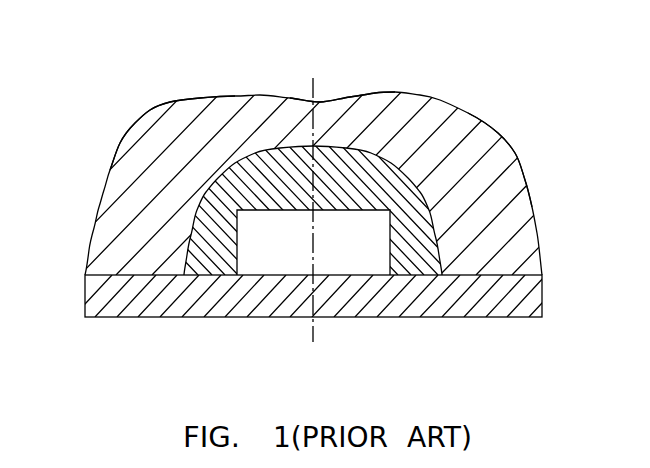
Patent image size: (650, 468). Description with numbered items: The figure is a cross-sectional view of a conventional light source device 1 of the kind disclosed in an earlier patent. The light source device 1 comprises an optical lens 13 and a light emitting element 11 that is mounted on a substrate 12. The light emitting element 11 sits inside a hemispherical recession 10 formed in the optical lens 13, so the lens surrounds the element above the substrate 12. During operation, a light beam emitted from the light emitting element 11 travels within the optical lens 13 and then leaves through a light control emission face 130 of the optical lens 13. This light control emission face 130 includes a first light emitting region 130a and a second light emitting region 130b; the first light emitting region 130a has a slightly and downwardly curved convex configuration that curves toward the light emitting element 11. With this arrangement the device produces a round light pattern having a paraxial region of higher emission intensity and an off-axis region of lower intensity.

The light source device 1 is at (80, 36).
The hemispherical recession 10 is at (197, 222).
The light emitting element 11 is at (278, 262).
The substrate 12 is at (440, 317).
The optical lens 13 is at (113, 149).
The light control emission face 130 is at (143, 119).
The first light emitting region 130a is at (342, 100).
The second light emitting region 130b is at (515, 155).